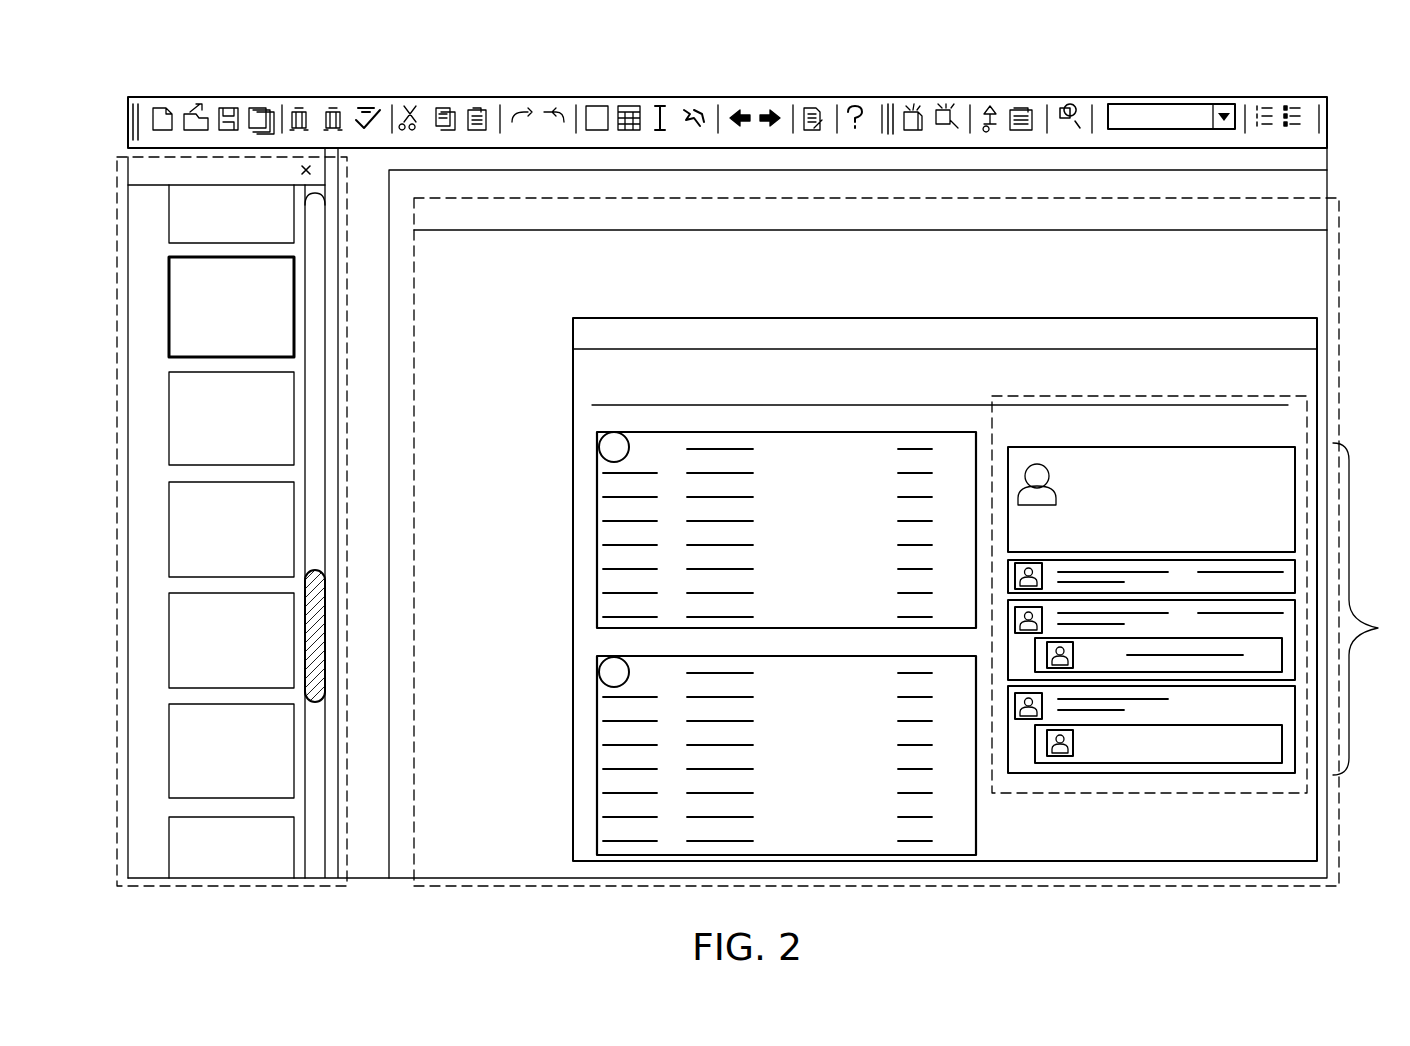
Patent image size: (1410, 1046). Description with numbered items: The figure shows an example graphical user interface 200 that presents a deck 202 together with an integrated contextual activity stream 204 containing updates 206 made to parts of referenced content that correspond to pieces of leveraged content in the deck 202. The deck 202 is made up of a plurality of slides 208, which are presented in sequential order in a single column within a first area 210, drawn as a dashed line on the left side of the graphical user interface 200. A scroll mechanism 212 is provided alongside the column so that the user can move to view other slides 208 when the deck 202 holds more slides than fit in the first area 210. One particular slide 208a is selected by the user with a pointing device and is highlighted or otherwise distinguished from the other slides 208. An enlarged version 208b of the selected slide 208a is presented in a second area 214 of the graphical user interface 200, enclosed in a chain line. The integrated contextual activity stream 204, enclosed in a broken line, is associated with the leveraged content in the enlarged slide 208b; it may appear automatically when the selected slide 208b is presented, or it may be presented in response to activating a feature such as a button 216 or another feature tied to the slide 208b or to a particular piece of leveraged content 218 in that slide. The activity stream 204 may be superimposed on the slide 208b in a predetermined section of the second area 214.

The graphical user interface 200 is at (687, 76).
The deck 202 is at (259, 864).
The integrated contextual activity stream 204 is at (1157, 806).
The updates 206 is at (1364, 609).
The slides 208 is at (128, 158).
The selected slide 208a is at (229, 358).
The enlarged version of the selected slide 208b is at (545, 527).
The first area 210 is at (263, 155).
The scroll mechanism 212 is at (318, 640).
The second area 214 is at (528, 888).
The button 216 is at (614, 436).
The piece of leveraged content 218 is at (597, 575).